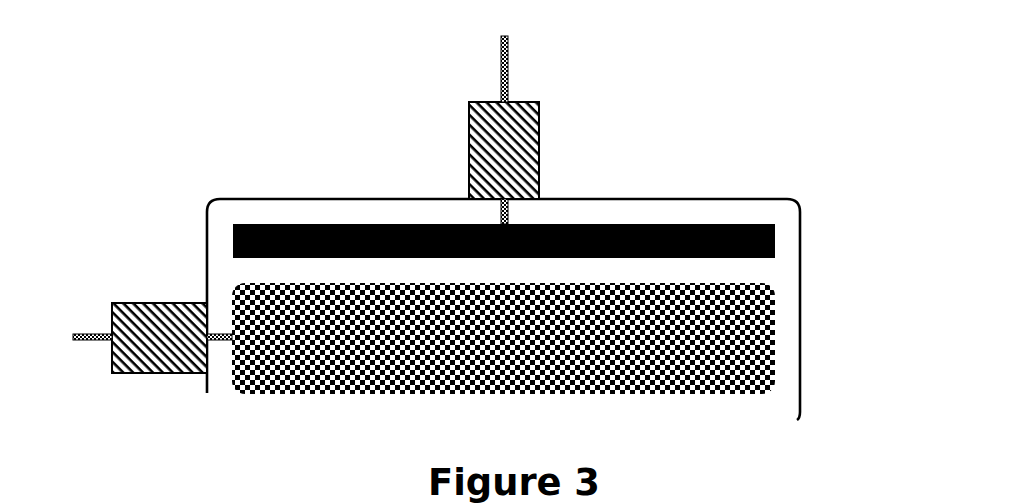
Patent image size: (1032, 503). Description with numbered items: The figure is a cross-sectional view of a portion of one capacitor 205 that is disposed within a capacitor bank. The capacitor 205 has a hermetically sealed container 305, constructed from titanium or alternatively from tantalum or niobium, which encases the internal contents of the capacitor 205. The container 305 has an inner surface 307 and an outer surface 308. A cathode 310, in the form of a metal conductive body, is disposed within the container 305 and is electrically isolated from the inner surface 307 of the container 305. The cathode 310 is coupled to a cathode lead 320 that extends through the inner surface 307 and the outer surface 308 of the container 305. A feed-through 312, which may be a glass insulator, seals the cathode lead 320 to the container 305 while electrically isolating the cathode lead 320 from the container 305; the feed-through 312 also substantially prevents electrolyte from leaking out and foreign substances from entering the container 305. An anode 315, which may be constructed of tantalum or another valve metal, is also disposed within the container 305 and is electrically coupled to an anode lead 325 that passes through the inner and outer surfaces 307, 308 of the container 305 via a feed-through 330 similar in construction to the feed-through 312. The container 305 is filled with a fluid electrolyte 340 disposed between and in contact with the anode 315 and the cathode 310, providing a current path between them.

The capacitor 205 is at (383, 54).
The container 305 is at (800, 245).
The inner surface 307 is at (392, 207).
The outer surface 308 is at (256, 190).
The cathode 310 is at (633, 225).
The feed-through 312 is at (539, 145).
The anode 315 is at (762, 342).
The cathode lead 320 is at (508, 66).
The anode lead 325 is at (93, 342).
The feed-through 330 is at (170, 303).
The fluid electrolyte 340 is at (747, 272).